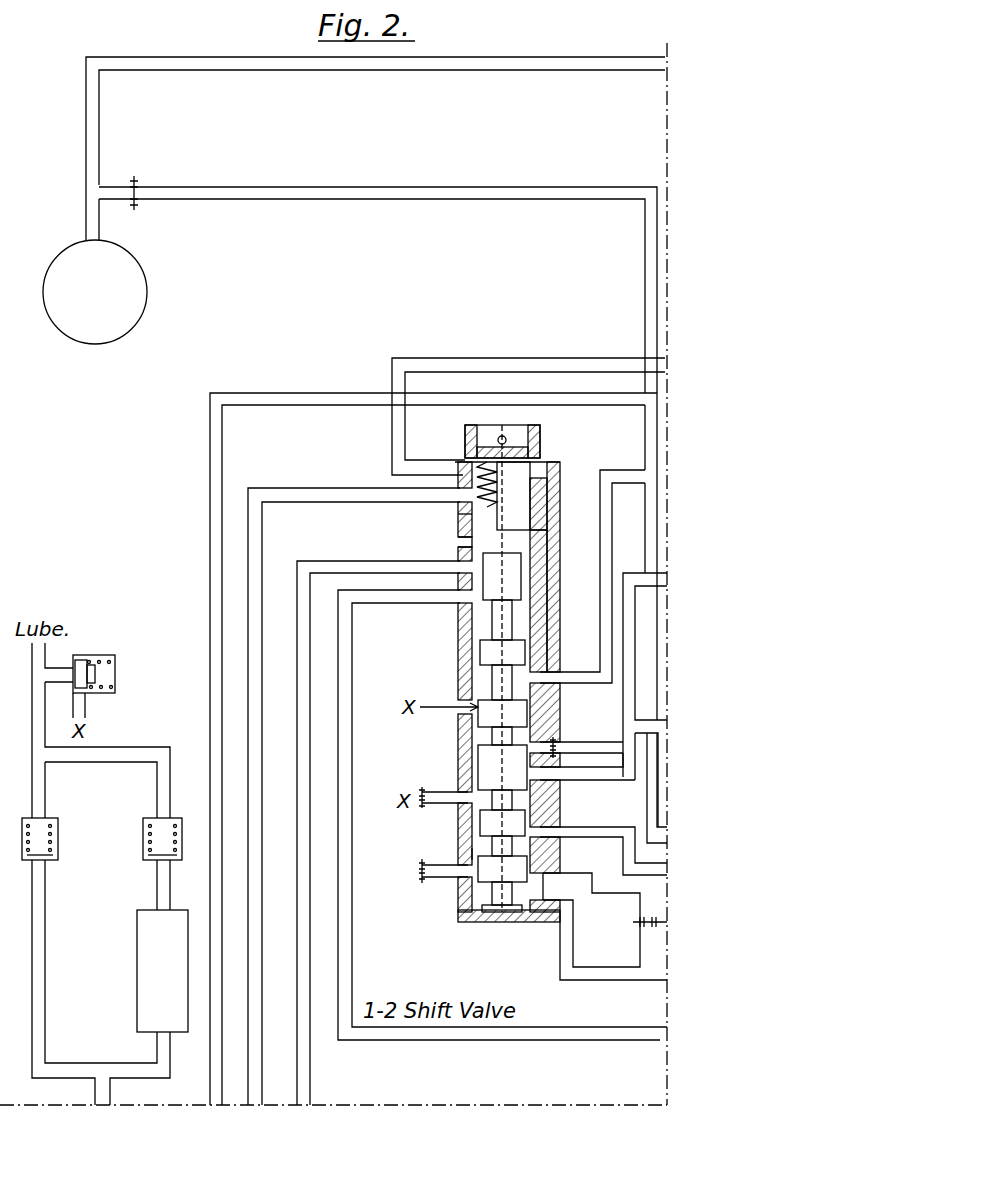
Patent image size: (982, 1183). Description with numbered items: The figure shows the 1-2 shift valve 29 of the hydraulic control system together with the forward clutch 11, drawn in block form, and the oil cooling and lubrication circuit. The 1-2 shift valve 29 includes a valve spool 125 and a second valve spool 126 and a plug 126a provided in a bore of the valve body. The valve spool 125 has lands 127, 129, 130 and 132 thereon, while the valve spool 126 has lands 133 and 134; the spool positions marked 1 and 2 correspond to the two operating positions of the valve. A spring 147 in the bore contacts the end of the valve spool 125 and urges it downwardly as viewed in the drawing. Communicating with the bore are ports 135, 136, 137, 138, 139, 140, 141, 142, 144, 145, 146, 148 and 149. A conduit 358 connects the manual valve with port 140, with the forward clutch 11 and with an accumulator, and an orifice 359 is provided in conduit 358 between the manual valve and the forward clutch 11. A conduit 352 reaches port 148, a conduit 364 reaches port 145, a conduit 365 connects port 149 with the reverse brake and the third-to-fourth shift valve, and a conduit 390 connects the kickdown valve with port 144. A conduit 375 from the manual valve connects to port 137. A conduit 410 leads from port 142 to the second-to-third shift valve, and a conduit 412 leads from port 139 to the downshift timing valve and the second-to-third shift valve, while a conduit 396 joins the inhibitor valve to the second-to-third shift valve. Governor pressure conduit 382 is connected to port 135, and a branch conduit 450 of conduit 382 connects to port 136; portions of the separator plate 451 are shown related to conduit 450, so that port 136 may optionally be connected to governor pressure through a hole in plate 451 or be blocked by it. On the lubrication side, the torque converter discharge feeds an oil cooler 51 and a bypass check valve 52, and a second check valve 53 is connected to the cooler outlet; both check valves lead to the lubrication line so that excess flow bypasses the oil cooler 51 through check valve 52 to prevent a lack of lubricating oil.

The conduit 358 is at (437, 71).
The orifice 359 is at (140, 190).
The forward clutch 11 is at (148, 276).
The conduit 365 is at (518, 362).
The conduit 396 is at (339, 395).
The conduit 352 is at (300, 491).
The conduit 364 is at (345, 566).
The conduit 390 is at (400, 603).
The conduit 410 is at (632, 478).
The conduit 412 is at (622, 622).
The port 140 is at (541, 740).
The port 139 is at (534, 784).
The port 138 is at (532, 806).
The conduit 375 is at (588, 837).
The conduit 382 is at (659, 976).
The branch conduit 450 is at (630, 902).
The separator plate 451 is at (420, 868).
The 1-2 shift valve 29 is at (550, 434).
The land 127 is at (464, 645).
The port 149 is at (541, 470).
The port 148 is at (546, 496).
The spring 147 is at (462, 458).
The plug 126a is at (466, 515).
The port 146 is at (462, 541).
The port 145 is at (536, 575).
The port 144 is at (536, 606).
The port 142 is at (536, 665).
The port 141 is at (536, 712).
The port 137 is at (532, 843).
The port 136 is at (536, 876).
The valve spool 125 is at (457, 680).
The land 129 is at (478, 658).
The land 130 is at (472, 745).
The land 132 is at (470, 785).
The land 133 is at (472, 832).
The land 134 is at (472, 890).
The port 135 is at (466, 912).
The valve spool 126 is at (464, 858).
The valve position 2 is at (481, 940).
The valve position 1 is at (520, 940).
The bypass check valve 52 is at (55, 839).
The second check valve 53 is at (149, 839).
The oil cooler 51 is at (147, 971).